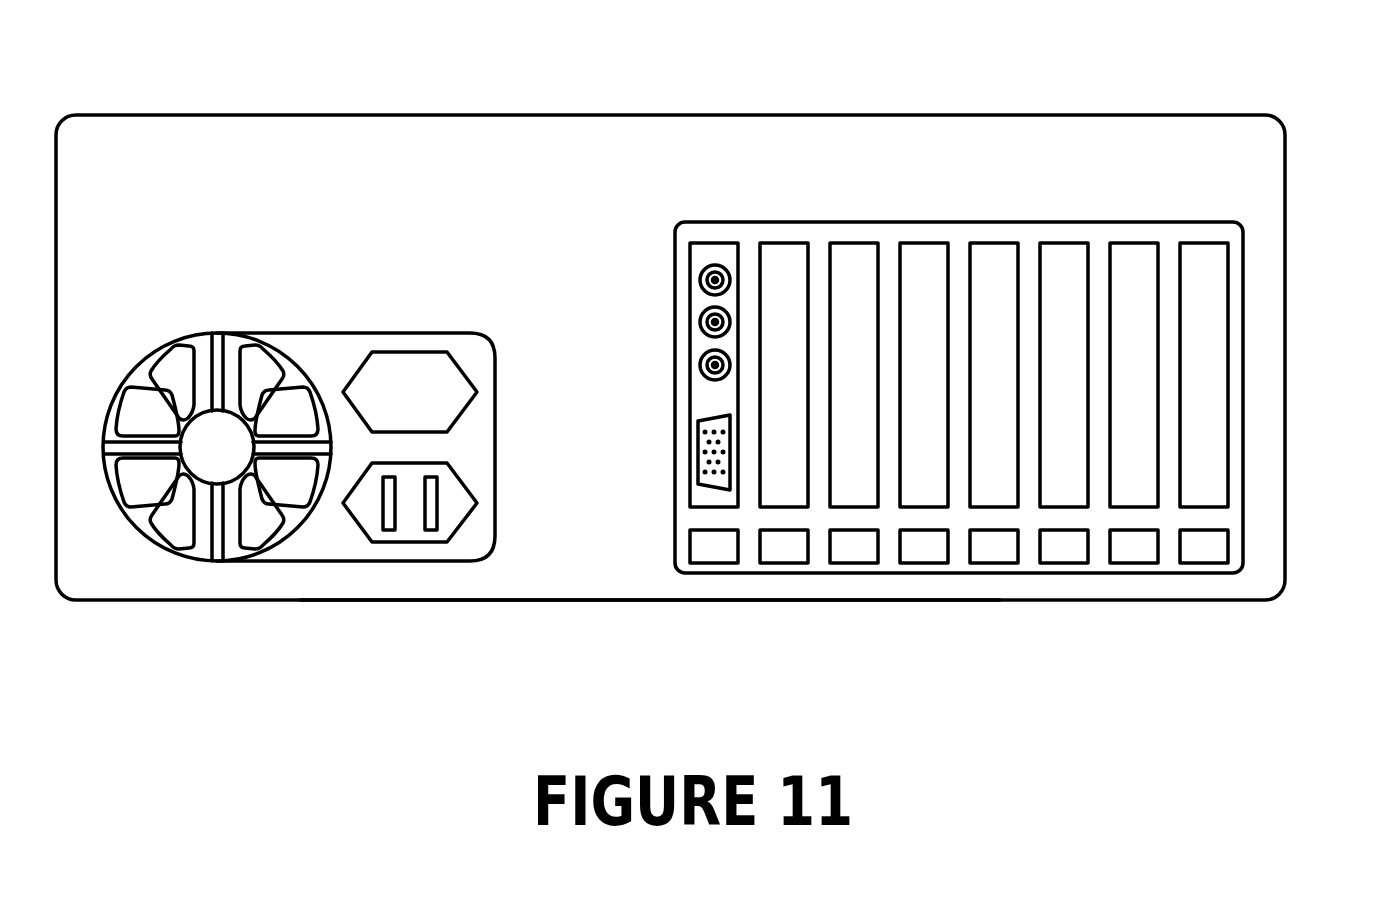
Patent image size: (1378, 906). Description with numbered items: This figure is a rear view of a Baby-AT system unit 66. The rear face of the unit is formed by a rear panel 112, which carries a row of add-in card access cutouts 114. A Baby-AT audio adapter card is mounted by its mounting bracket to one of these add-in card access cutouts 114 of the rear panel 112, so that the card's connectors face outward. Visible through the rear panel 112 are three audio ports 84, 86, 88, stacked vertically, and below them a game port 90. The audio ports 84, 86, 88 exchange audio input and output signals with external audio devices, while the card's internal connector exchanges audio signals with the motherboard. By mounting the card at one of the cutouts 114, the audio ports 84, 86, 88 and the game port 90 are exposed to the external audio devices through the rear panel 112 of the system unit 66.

The Baby-AT system unit 66 is at (566, 112).
The audio port 84 is at (706, 270).
The audio port 86 is at (705, 314).
The audio port 88 is at (705, 358).
The game port 90 is at (700, 437).
The rear panel 112 is at (555, 587).
The add-in card access cutouts 114 is at (1218, 438).